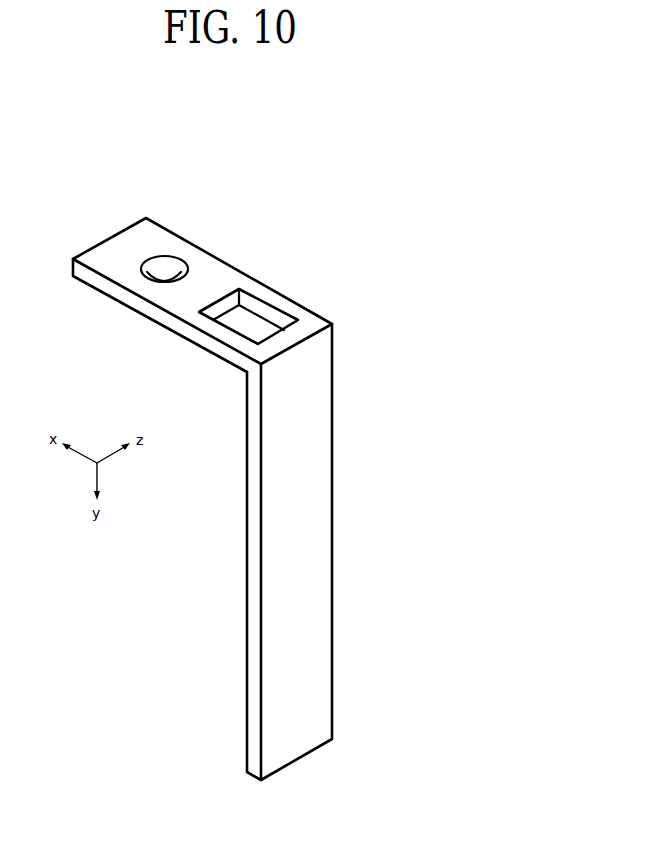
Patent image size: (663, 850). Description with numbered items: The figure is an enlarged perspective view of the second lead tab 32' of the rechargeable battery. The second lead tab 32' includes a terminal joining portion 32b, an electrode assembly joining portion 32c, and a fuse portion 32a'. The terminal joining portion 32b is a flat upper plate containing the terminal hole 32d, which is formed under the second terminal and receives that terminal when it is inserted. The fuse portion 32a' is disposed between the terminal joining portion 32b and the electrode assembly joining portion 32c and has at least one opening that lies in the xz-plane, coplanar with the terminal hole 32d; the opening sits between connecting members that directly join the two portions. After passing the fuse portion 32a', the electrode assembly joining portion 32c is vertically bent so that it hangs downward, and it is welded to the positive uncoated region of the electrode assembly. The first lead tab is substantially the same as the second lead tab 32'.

The second lead tab 32' is at (308, 471).
The terminal joining portion 32b is at (168, 242).
The electrode assembly joining portion 32c is at (315, 484).
The terminal hole 32d is at (149, 268).
The fuse portion 32a' is at (371, 298).